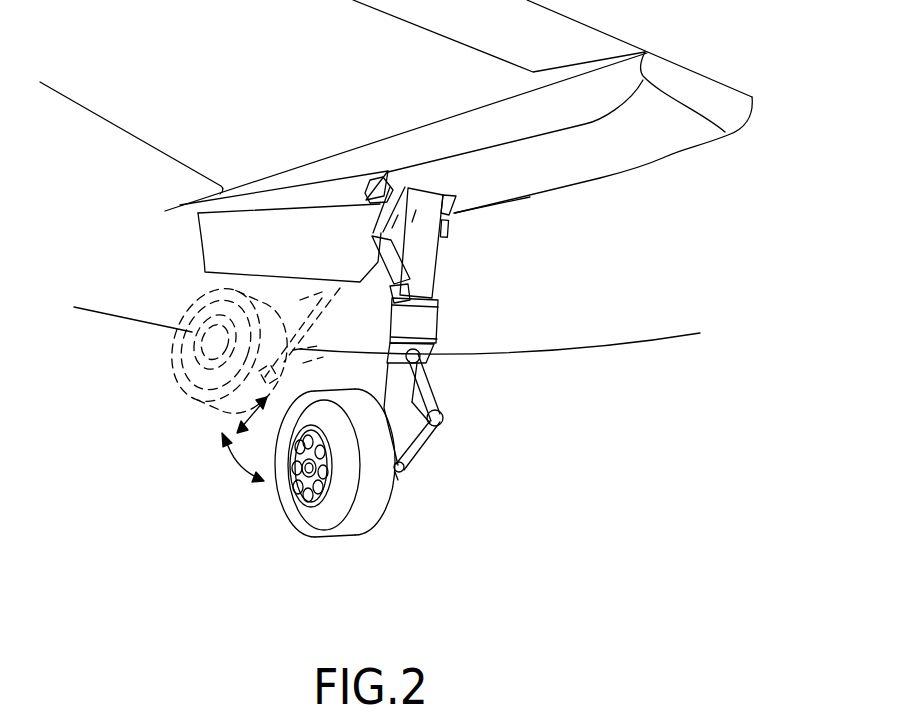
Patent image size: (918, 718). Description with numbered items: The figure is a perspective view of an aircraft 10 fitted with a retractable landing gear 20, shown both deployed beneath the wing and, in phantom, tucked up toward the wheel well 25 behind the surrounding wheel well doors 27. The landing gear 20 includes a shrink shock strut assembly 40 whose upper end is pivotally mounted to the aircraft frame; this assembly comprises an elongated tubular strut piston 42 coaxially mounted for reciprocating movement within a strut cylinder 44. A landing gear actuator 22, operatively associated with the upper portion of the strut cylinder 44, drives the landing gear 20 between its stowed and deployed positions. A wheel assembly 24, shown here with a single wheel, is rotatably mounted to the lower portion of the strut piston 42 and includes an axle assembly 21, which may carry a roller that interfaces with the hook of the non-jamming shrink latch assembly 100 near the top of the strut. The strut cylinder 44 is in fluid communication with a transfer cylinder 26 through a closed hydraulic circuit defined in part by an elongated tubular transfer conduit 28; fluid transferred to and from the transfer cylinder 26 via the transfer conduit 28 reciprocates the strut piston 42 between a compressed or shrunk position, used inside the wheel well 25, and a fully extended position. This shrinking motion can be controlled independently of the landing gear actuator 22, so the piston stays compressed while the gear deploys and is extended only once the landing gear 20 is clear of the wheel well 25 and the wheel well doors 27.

The aircraft 10 is at (584, 376).
The retractable landing gear 20 is at (478, 426).
The axle assembly 21 is at (402, 476).
The landing gear actuator 22 is at (382, 214).
The wheel assembly 24 is at (414, 490).
The wheel well 25 is at (432, 168).
The transfer cylinder 26 is at (453, 214).
The wheel well doors 27 is at (277, 200).
The transfer conduit 28 is at (441, 255).
The shrink shock strut assembly 40 is at (370, 372).
The strut piston 42 is at (433, 437).
The strut cylinder 44 is at (434, 278).
The non-jamming shrink latch assembly 100 is at (375, 202).